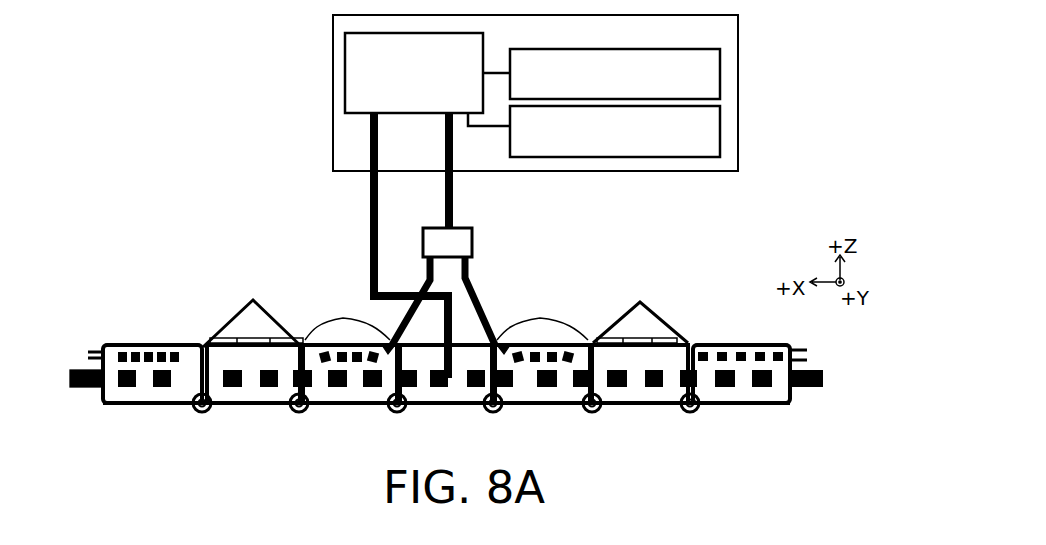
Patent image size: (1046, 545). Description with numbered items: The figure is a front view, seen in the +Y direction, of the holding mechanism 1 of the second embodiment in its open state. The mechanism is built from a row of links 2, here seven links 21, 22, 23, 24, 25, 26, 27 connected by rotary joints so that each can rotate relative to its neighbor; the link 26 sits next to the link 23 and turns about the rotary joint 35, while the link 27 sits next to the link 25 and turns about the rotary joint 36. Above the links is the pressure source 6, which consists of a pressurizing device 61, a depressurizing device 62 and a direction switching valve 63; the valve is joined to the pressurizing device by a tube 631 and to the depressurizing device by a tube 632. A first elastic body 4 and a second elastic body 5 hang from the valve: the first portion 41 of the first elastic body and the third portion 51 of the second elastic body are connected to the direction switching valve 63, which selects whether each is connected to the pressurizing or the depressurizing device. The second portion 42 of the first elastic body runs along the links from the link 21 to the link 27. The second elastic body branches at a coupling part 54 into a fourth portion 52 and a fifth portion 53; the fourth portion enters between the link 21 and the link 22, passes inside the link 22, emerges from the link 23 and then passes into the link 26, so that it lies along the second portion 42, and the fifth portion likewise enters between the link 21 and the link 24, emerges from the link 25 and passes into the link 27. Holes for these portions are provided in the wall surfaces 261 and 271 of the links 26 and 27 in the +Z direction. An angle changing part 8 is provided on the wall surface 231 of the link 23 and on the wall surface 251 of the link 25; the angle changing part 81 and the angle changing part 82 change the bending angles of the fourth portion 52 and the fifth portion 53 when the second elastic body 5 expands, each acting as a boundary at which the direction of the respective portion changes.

The holding mechanism 1 is at (806, 166).
The links 2 is at (140, 302).
The first elastic body 4 is at (355, 245).
The first portion 41 is at (368, 217).
The second elastic body 5 is at (487, 233).
The third portion 51 is at (453, 180).
The fourth portion 52 is at (340, 355).
The fifth portion 53 is at (537, 355).
The coupling part 54 is at (462, 242).
The pressure source 6 is at (333, 127).
The pressurizing device 61 is at (720, 67).
The depressurizing device 62 is at (720, 112).
The direction switching valve 63 is at (345, 73).
The tube 631 is at (497, 73).
The tube 632 is at (483, 126).
The angle changing part 8 is at (451, 362).
The angle changing part 81 is at (257, 328).
The angle changing part 82 is at (637, 323).
The link 21 is at (440, 405).
The link 22 is at (345, 407).
The link 23 is at (247, 407).
The wall surface 231 is at (217, 336).
The link 24 is at (543, 405).
The link 25 is at (645, 405).
The wall surface 251 is at (687, 335).
The link 26 is at (168, 407).
The wall surface 261 is at (137, 345).
The link 27 is at (748, 405).
The wall surface 271 is at (728, 342).
The rotary joint 35 is at (200, 410).
The rotary joint 36 is at (688, 410).
The second portion 42 is at (135, 407).